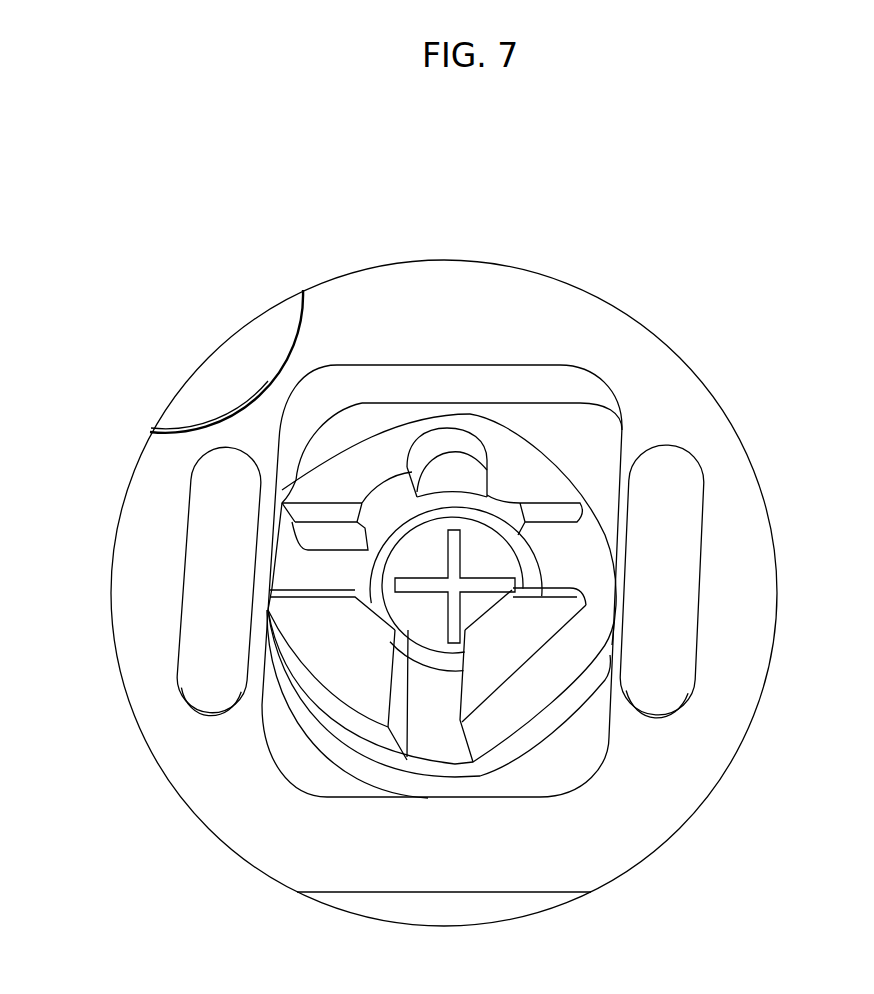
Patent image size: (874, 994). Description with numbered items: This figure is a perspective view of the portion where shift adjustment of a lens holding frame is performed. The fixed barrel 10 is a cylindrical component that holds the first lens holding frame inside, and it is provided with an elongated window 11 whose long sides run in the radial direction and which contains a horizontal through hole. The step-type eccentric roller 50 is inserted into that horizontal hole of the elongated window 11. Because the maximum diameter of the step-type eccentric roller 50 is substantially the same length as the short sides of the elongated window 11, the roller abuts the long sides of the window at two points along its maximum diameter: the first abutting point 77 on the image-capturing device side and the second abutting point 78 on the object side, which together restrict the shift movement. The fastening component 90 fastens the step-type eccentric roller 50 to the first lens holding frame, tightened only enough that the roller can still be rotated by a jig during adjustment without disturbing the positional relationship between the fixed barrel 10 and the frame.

The fixed barrel 10 is at (668, 383).
The elongated window 11 is at (315, 397).
The step-type eccentric roller 50 is at (335, 683).
The first abutting point 77 is at (617, 590).
The second abutting point 78 is at (270, 572).
The fastening component 90 is at (513, 573).